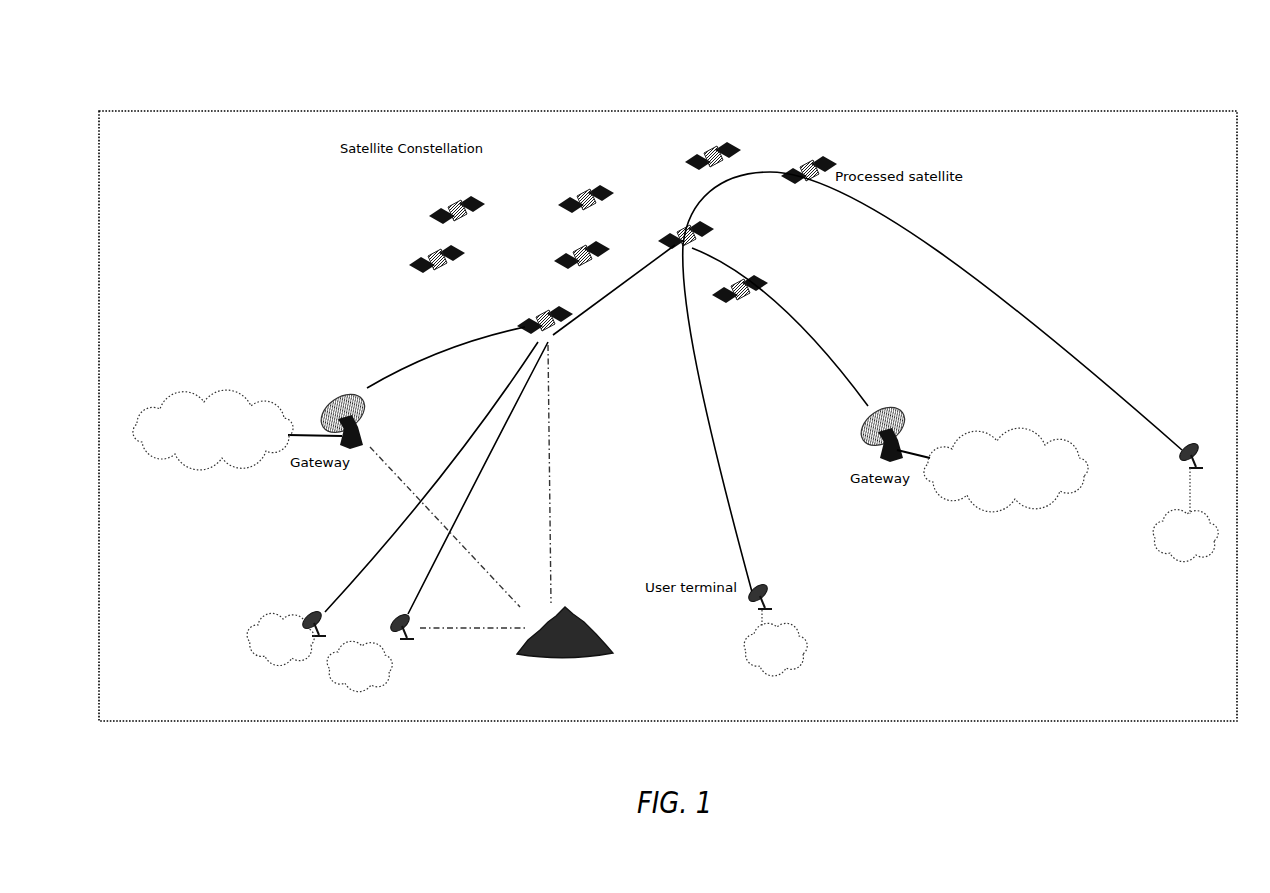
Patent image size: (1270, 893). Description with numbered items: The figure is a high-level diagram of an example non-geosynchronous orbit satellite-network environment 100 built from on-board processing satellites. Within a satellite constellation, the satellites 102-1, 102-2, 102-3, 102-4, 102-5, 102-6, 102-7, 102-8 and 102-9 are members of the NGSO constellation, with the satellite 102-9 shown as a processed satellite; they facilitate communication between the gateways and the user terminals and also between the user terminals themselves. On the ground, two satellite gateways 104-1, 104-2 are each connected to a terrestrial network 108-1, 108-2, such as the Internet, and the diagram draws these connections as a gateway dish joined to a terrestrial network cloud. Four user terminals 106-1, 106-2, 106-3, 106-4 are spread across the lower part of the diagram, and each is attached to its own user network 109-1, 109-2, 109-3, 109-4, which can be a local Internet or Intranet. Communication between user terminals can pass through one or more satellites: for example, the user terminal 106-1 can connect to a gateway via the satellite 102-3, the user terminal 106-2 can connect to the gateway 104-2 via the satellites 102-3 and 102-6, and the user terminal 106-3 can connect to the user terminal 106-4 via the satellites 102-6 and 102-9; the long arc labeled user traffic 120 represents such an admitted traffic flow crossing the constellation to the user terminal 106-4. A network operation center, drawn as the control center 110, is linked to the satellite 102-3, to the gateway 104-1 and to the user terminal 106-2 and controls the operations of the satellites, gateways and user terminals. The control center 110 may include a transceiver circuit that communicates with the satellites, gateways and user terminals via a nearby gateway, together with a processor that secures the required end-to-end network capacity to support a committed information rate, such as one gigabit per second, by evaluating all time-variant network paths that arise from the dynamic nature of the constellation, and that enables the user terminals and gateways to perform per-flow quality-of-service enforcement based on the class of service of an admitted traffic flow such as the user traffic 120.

The NGSO satellite-network environment 100 is at (176, 80).
The NGSO satellite 102-1 is at (418, 262).
The NGSO satellite 102-2 is at (436, 213).
The NGSO satellite 102-3 is at (536, 318).
The NGSO satellite 102-4 is at (583, 193).
The NGSO satellite 102-5 is at (560, 262).
The NGSO satellite 102-6 is at (670, 240).
The NGSO satellite 102-7 is at (706, 153).
The NGSO satellite 102-8 is at (734, 308).
The NGSO satellite 102-9 is at (811, 161).
The satellite gateway 104-1 is at (350, 450).
The satellite gateway 104-2 is at (878, 486).
The user terminal 106-1 is at (305, 613).
The user terminal 106-2 is at (409, 641).
The user terminal 106-3 is at (769, 612).
The user terminal 106-4 is at (1178, 460).
The terrestrial network 108-1 is at (178, 398).
The terrestrial network 108-2 is at (1025, 499).
The user network 109-1 is at (252, 659).
The user network 109-2 is at (331, 669).
The user network 109-3 is at (805, 645).
The user network 109-4 is at (1142, 556).
The control center 110 is at (616, 655).
The admitted traffic flow 120 is at (975, 272).